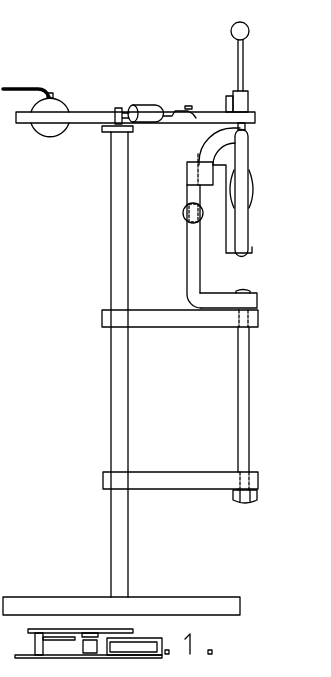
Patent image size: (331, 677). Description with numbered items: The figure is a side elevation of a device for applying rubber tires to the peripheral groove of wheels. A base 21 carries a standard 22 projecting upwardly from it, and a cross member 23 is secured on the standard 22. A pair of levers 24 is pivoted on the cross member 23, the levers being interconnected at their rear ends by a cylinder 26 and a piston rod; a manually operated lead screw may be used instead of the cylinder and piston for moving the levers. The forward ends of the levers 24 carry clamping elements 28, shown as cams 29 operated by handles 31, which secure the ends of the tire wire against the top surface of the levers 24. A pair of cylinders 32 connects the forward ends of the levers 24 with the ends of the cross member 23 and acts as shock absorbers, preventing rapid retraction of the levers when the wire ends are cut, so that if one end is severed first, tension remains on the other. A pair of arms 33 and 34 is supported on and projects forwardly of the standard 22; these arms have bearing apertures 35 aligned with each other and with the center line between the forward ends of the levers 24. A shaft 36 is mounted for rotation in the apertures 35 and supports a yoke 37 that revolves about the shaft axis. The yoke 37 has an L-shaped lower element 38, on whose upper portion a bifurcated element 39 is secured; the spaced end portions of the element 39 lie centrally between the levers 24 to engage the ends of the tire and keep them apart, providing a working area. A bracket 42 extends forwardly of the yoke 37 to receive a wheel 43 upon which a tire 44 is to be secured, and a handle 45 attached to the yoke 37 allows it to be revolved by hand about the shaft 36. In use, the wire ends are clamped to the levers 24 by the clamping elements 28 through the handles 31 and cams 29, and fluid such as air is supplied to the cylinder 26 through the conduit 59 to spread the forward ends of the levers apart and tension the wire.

The base 21 is at (170, 601).
The standard 22 is at (115, 428).
The cross member 23 is at (102, 131).
The lever 24 is at (257, 120).
The cylinder 26 is at (58, 100).
The clamping element 28 is at (251, 77).
The cam 29 is at (250, 101).
The handle 31 is at (246, 31).
The cylinder 32 is at (143, 106).
The arm 33 is at (170, 490).
The arm 34 is at (172, 328).
The bearing aperture 35 is at (257, 329).
The shaft 36 is at (250, 377).
The yoke 37 is at (179, 275).
The L-shaped lower element 38 is at (190, 284).
The bifurcated element 39 is at (201, 148).
The bracket 42 is at (254, 253).
The wheel 43 is at (255, 178).
The tire 44 is at (250, 157).
The handle 45 is at (185, 218).
The conduit 59 is at (24, 86).